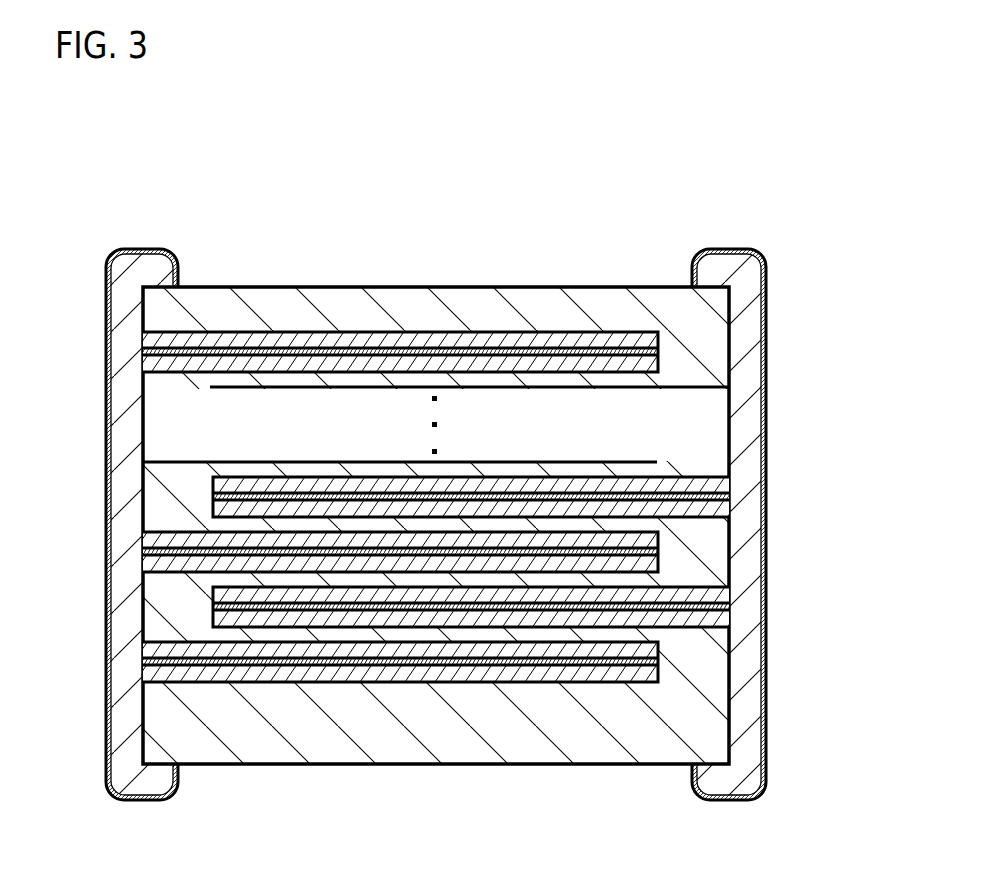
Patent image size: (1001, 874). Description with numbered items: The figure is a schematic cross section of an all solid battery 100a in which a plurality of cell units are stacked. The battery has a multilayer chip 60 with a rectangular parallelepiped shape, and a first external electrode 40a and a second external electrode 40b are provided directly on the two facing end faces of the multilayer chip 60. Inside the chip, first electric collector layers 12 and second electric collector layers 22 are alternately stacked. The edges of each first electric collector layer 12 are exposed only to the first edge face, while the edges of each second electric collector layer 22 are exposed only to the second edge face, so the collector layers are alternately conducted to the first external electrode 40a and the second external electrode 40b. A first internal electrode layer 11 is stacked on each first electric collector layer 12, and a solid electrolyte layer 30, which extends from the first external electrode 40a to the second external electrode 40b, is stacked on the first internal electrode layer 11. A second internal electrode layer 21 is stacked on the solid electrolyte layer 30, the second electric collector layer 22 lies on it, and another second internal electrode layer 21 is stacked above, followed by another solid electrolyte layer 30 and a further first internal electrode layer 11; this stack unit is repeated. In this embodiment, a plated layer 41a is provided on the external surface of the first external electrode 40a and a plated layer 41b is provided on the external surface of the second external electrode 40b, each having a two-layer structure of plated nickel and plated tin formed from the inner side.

The all solid battery 100a is at (868, 153).
The multilayer chip 60 is at (436, 500).
The solid electrolyte layer 30 is at (322, 636).
The first internal electrode layer 11 is at (157, 540).
The first electric collector layer 12 is at (157, 551).
The second internal electrode layer 21 is at (725, 588).
The second electric collector layer 22 is at (725, 604).
The first external electrode 40a is at (126, 372).
The second external electrode 40b is at (748, 372).
The plated layer 41a is at (106, 318).
The plated layer 41b is at (766, 314).